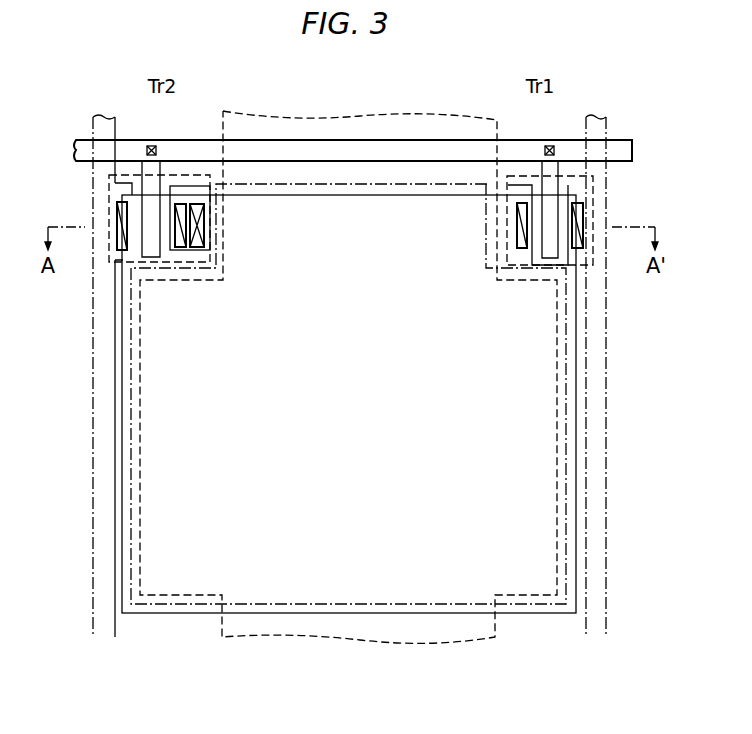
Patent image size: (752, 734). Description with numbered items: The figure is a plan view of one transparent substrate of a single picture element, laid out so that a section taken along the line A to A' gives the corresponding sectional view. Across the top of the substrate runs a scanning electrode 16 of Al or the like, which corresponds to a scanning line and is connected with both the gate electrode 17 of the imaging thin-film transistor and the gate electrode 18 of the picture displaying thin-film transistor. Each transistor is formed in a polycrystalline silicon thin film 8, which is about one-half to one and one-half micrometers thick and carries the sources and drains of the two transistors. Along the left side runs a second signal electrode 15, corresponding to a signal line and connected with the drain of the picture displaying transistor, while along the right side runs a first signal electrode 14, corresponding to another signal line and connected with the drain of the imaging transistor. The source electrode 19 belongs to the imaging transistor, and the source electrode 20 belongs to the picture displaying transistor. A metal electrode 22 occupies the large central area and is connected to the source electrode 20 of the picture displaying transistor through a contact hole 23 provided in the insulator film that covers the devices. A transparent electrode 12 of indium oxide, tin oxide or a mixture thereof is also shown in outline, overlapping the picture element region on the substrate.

The polycrystalline silicon thin film 8 is at (137, 178).
The transparent electrode 12 is at (467, 120).
The first signal electrode 14 is at (600, 380).
The second signal electrode 15 is at (96, 413).
The scanning electrode 16 is at (343, 140).
The gate electrode 17 is at (552, 187).
The gate electrode 18 is at (157, 172).
The source electrode 19 is at (468, 183).
The source electrode 20 is at (194, 195).
The metal electrode 22 is at (398, 195).
The contact hole 23 is at (200, 200).